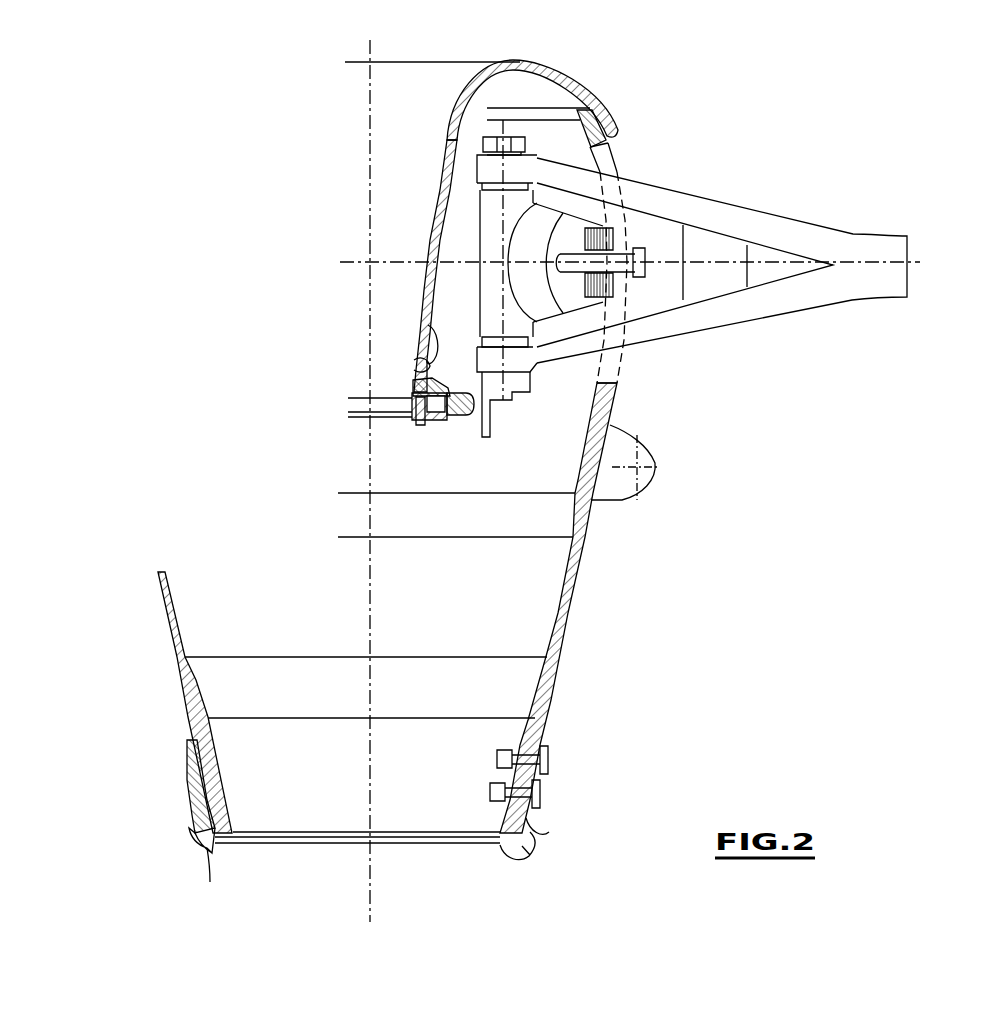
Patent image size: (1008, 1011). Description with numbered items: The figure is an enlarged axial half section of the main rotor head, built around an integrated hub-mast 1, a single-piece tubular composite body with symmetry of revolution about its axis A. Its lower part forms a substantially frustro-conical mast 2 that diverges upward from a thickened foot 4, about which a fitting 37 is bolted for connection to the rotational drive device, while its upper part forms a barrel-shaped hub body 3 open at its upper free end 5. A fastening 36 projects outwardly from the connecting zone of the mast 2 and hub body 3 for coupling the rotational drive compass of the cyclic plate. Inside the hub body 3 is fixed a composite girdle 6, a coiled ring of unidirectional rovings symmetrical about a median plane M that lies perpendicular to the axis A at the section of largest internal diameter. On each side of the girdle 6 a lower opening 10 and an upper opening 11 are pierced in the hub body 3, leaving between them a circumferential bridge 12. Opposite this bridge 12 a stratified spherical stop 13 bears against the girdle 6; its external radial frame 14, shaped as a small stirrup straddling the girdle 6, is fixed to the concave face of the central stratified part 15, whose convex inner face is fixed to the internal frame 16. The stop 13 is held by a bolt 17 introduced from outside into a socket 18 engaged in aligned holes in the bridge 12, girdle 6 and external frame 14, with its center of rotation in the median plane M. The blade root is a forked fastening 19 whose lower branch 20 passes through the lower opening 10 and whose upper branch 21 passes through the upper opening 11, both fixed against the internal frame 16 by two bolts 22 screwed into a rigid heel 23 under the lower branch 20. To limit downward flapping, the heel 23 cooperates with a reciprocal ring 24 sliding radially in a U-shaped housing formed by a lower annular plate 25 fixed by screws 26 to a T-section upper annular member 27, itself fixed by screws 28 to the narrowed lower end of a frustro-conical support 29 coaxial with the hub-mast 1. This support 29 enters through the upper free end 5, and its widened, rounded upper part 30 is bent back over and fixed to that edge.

The hub-mast 1 is at (593, 587).
The mast 2 is at (562, 626).
The hub body 3 is at (604, 402).
The foot 4 is at (497, 823).
The upper free end 5 is at (584, 120).
The girdle 6 is at (608, 238).
The lower opening 10 is at (606, 374).
The upper opening 11 is at (612, 152).
The bridge 12 is at (627, 292).
The stratified spherical stop 13 is at (572, 209).
The external radial frame 14 is at (526, 317).
The central stratified part 15 is at (537, 258).
The internal frame 16 is at (487, 208).
The bolt 17 is at (700, 302).
The socket 18 is at (667, 262).
The forked fastening 19 is at (871, 255).
The lower branch 20 is at (647, 333).
The upper branch 21 is at (643, 190).
The bolts 22 is at (484, 140).
The heel 23 is at (520, 384).
The reciprocal ring 24 is at (465, 416).
The lower annular plate 25 is at (437, 421).
The screws 26 is at (418, 424).
The upper annular member 27 is at (430, 382).
The screws 28 is at (433, 335).
The frustro-conical support 29 is at (437, 216).
The upper part 30 is at (522, 68).
The fastening 36 is at (638, 470).
The fitting 37 is at (521, 845).
The axis A is at (370, 122).
The median plane M is at (735, 204).